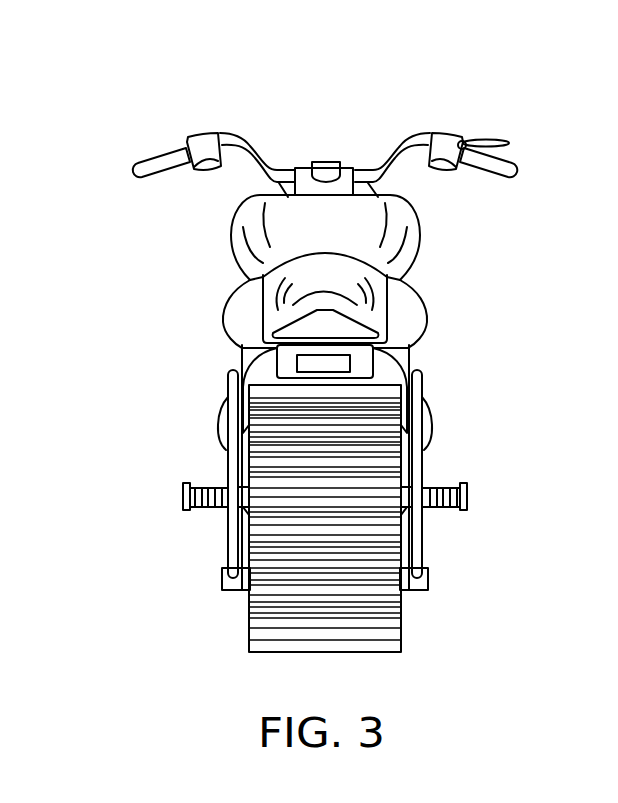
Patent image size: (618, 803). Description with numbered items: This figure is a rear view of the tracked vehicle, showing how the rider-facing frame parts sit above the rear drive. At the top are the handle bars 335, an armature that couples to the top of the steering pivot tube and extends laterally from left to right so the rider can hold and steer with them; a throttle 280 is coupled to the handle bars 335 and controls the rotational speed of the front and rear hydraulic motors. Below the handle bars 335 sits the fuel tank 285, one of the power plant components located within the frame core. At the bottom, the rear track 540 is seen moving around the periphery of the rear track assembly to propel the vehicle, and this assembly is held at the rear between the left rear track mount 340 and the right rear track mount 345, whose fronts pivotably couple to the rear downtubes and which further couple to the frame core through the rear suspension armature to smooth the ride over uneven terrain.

The handle bars 335 is at (247, 143).
The throttle 280 is at (485, 142).
The fuel tank 285 is at (263, 236).
The left rear track mount 340 is at (235, 393).
The right rear track mount 345 is at (418, 466).
The rear track 540 is at (263, 627).